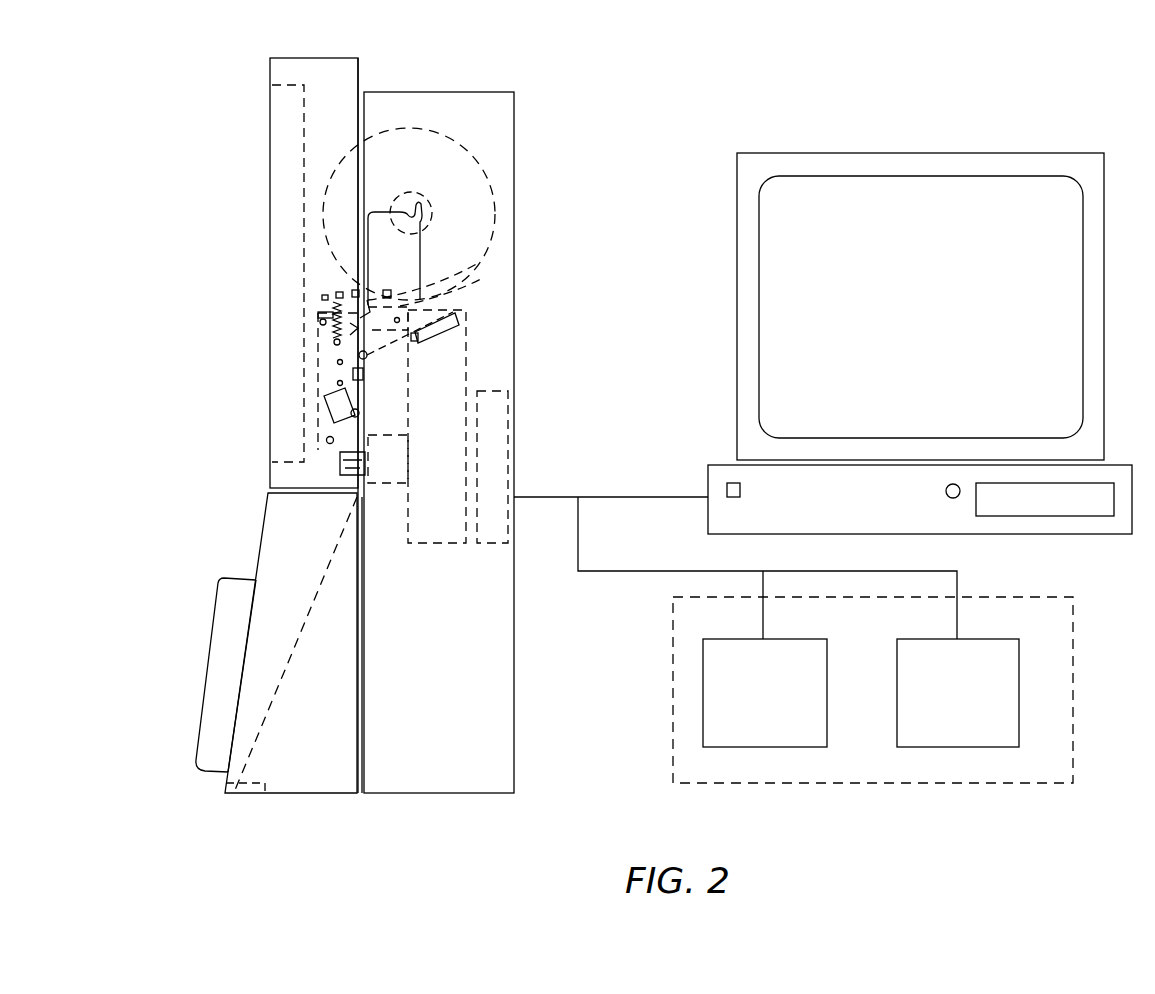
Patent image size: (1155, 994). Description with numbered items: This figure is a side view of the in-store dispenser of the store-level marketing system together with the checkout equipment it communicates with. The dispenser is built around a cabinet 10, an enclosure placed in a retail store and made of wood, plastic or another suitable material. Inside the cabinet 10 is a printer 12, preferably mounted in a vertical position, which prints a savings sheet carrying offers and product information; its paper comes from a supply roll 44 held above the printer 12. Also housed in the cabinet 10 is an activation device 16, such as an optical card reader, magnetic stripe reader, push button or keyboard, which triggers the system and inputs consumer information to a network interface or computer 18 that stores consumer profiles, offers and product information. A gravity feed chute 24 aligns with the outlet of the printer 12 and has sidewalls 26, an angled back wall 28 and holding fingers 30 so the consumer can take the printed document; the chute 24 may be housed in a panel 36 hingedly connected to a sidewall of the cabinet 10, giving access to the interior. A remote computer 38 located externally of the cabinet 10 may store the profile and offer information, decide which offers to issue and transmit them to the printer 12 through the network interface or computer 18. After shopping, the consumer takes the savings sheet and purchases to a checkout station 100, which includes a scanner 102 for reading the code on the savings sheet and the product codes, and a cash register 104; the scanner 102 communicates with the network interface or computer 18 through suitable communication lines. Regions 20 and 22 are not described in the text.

The cabinet 10 is at (526, 86).
The printer 12 is at (466, 360).
The activation device 16 is at (216, 610).
The network interface or computer 18 is at (508, 408).
The storage compartment 20 is at (304, 176).
The housing 22 is at (358, 59).
The gravity feed chute 24 is at (287, 531).
The sidewalls 26 is at (270, 656).
The angled back wall 28 is at (320, 578).
The holding fingers 30 is at (247, 795).
The panel 36 is at (343, 795).
The remote computer 38 is at (922, 231).
The supply roll 44 is at (495, 216).
The checkout station 100 is at (1073, 665).
The scanner 102 is at (778, 740).
The cash register 104 is at (975, 740).